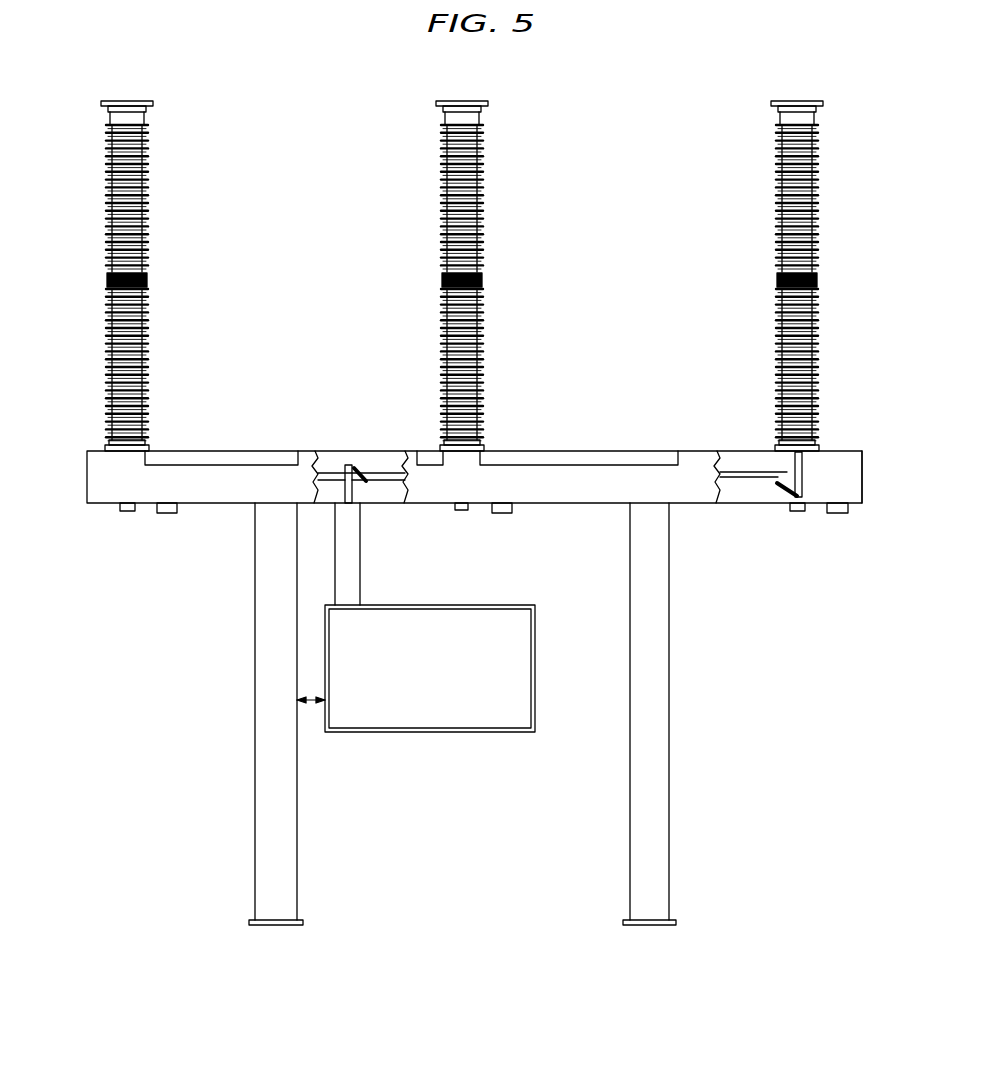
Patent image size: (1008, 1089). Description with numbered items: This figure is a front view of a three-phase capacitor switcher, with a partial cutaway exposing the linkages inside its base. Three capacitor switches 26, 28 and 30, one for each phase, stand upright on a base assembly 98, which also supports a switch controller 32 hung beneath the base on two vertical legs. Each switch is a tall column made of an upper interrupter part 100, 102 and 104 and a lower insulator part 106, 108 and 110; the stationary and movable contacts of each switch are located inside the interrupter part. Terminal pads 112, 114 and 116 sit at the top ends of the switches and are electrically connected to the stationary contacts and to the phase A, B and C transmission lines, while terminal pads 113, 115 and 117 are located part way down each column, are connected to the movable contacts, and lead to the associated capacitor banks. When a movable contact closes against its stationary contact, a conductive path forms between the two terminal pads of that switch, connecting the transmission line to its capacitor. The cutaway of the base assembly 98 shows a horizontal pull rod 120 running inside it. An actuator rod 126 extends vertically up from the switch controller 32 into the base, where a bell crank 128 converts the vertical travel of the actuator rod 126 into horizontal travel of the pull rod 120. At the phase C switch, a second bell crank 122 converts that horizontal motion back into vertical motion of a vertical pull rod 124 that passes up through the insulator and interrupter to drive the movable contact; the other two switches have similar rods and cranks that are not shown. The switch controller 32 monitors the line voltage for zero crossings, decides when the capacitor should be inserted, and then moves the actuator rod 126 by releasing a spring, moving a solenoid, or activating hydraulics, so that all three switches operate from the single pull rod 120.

The capacitor switch 26 is at (210, 140).
The capacitor switch 28 is at (546, 140).
The capacitor switch 30 is at (732, 140).
The switch controller 32 is at (440, 682).
The base assembly 98 is at (198, 491).
The interrupter part 100 is at (150, 193).
The interrupter part 102 is at (485, 167).
The interrupter part 104 is at (819, 204).
The insulator part 106 is at (150, 356).
The insulator part 108 is at (485, 356).
The insulator part 110 is at (820, 356).
The terminal pad 112 is at (101, 104).
The terminal pad 113 is at (108, 280).
The terminal pad 114 is at (436, 104).
The terminal pad 115 is at (443, 281).
The terminal pad 116 is at (824, 105).
The terminal pad 117 is at (820, 282).
The horizontal pull rod 120 is at (335, 470).
The bell crank 122 is at (780, 491).
The vertical pull rod 124 is at (810, 482).
The actuator rod 126 is at (365, 503).
The bell crank 128 is at (364, 468).